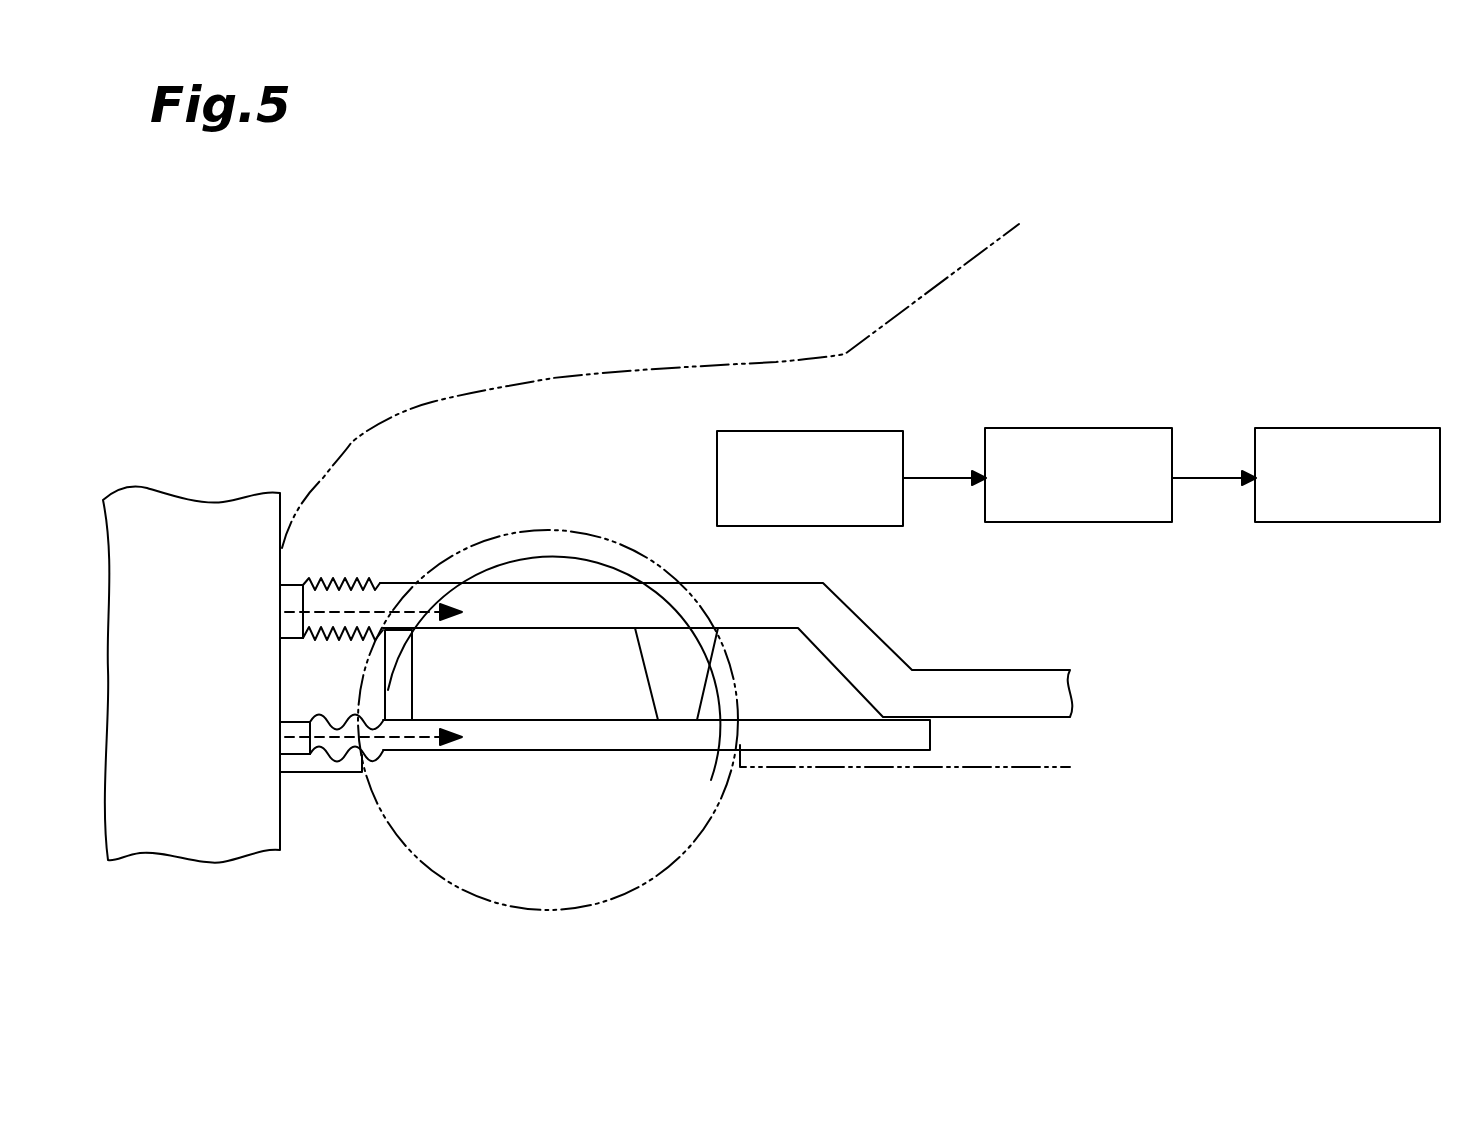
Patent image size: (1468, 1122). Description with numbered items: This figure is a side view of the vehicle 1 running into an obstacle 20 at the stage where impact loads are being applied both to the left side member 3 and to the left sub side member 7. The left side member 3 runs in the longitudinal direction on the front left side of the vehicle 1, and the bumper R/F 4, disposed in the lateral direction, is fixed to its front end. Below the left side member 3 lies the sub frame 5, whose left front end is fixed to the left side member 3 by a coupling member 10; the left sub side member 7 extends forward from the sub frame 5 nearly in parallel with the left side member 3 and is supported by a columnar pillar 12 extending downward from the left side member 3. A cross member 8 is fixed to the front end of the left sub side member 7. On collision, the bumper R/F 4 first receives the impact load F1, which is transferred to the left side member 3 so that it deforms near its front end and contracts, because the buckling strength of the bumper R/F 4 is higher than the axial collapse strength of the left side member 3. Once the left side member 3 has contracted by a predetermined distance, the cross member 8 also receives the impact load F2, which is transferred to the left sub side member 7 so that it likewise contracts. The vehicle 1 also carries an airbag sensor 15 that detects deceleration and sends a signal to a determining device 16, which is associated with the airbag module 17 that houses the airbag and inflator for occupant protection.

The vehicle 1 is at (830, 222).
The left side member 3 is at (883, 640).
The bumper R/F 4 is at (294, 585).
The sub frame 5 is at (877, 752).
The left sub side member 7 is at (487, 752).
The cross member 8 is at (298, 763).
The coupling member 10 is at (642, 680).
The pillar 12 is at (413, 697).
The airbag sensor 15 is at (784, 429).
The determining device 16 is at (1075, 427).
The airbag module 17 is at (1348, 427).
The obstacle 20 is at (178, 865).
The impact load F1 is at (380, 622).
The impact load F2 is at (345, 758).